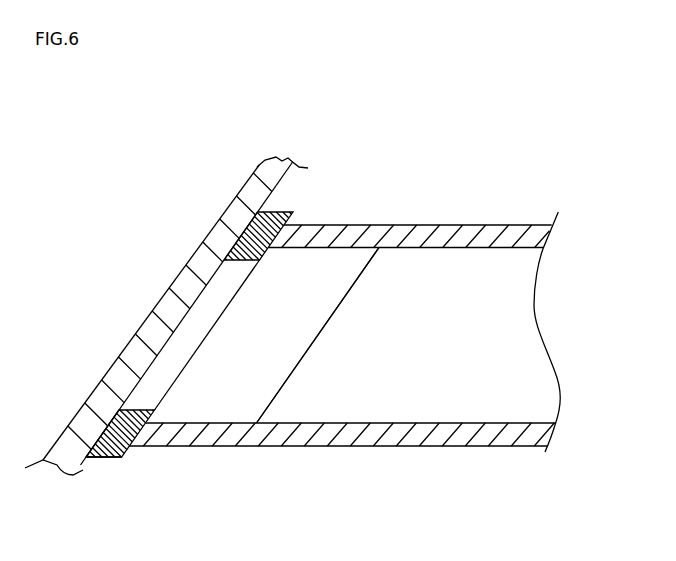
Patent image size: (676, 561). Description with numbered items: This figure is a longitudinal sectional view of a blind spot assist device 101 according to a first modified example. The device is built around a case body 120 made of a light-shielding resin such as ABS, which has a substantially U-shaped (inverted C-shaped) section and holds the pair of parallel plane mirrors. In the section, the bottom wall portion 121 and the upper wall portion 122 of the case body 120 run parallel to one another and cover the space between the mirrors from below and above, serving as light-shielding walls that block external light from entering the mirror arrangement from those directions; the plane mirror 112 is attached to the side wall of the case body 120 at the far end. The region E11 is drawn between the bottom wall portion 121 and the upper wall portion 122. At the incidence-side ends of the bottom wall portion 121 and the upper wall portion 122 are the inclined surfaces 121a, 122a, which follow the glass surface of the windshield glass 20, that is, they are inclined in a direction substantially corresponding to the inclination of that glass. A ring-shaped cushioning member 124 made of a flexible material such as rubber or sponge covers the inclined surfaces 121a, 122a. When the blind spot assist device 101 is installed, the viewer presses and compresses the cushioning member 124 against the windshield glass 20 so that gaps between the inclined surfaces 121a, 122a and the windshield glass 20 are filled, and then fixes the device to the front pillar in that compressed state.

The windshield glass 20 is at (293, 177).
The inclined surface 122a is at (272, 236).
The upper wall portion 122 is at (462, 225).
The case body 120 is at (410, 199).
The light emitting region E11 is at (308, 333).
The plane mirror 112 is at (504, 400).
The bottom wall portion 121 is at (468, 448).
The inclined surface 121a is at (137, 447).
The cushioning member 124 is at (95, 460).
The blind spot assist device 101 is at (563, 266).